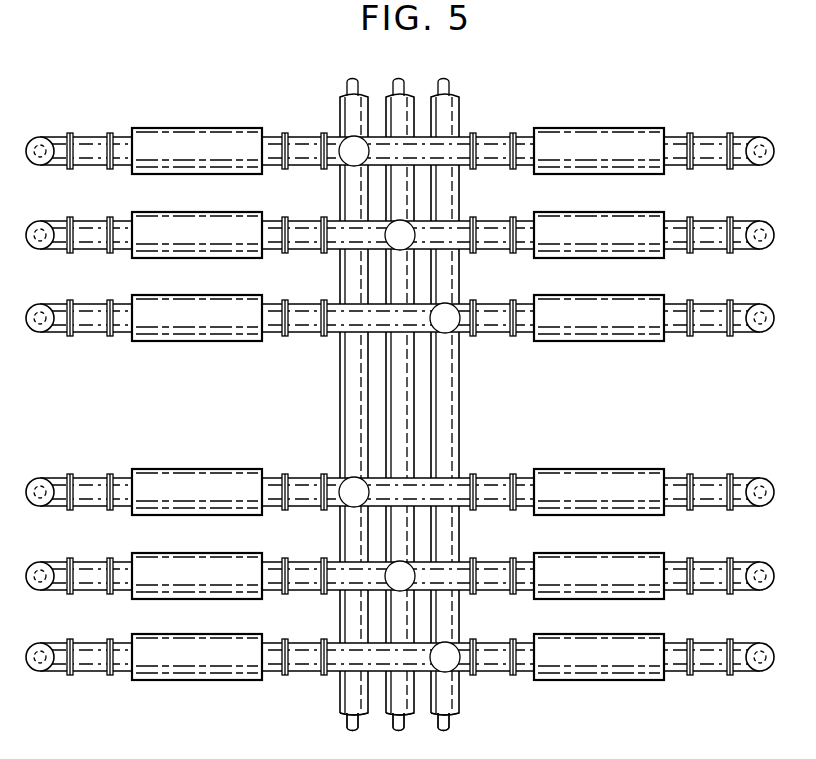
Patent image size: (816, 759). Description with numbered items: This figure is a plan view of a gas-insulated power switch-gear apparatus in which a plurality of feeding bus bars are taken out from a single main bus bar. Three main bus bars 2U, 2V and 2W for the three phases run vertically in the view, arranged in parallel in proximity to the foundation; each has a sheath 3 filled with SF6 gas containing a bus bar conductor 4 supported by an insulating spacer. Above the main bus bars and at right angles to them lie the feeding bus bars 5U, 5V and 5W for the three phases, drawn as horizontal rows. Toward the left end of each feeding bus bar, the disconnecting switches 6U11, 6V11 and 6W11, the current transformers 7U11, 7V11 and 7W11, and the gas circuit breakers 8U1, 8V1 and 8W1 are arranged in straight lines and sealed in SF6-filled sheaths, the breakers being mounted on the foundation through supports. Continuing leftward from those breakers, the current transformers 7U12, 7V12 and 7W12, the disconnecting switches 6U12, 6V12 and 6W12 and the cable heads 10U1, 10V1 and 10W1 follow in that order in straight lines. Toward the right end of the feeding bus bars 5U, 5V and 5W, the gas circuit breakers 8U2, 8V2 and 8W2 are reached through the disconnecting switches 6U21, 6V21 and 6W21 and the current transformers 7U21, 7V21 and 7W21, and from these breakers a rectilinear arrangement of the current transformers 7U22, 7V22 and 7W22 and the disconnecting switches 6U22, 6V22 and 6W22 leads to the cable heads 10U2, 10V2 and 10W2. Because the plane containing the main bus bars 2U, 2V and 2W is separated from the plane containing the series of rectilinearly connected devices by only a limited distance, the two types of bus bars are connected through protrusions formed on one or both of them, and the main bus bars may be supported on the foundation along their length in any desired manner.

The main bus bar 2U is at (340, 391).
The main bus bar 2V is at (388, 420).
The main bus bar 2W is at (459, 424).
The sheath 3 is at (340, 691).
The bus bar conductor 4 is at (346, 722).
The feeding bus bar 5U is at (399, 124).
The feeding bus bar 5V is at (401, 241).
The feeding bus bar 5W is at (394, 326).
The disconnecting switch 6U12 is at (89, 137).
The disconnecting switch 6U11 is at (303, 136).
The disconnecting switch 6U21 is at (493, 137).
The disconnecting switch 6U22 is at (710, 136).
The disconnecting switch 6V12 is at (85, 222).
The disconnecting switch 6V11 is at (306, 222).
The disconnecting switch 6V21 is at (487, 222).
The disconnecting switch 6V22 is at (712, 222).
The disconnecting switch 6W12 is at (94, 334).
The disconnecting switch 6W11 is at (306, 305).
The disconnecting switch 6W21 is at (500, 334).
The disconnecting switch 6W22 is at (707, 304).
The current transformer 7U12 is at (114, 134).
The current transformer 7U11 is at (271, 136).
The current transformer 7U21 is at (527, 133).
The current transformer 7U22 is at (672, 137).
The current transformer 7V12 is at (114, 220).
The current transformer 7V11 is at (267, 221).
The current transformer 7V21 is at (518, 222).
The current transformer 7V22 is at (673, 222).
The current transformer 7W12 is at (114, 303).
The current transformer 7W11 is at (272, 334).
The current transformer 7W21 is at (519, 304).
The current transformer 7W22 is at (677, 335).
The gas circuit breaker 8U1 is at (194, 128).
The gas circuit breaker 8U2 is at (589, 128).
The gas circuit breaker 8V1 is at (183, 213).
The gas circuit breaker 8V2 is at (587, 213).
The gas circuit breaker 8W1 is at (183, 296).
The gas circuit breaker 8W2 is at (587, 296).
The cable head 10U1 is at (41, 138).
The cable head 10U2 is at (759, 132).
The cable head 10V1 is at (41, 222).
The cable head 10V2 is at (768, 218).
The cable head 10W1 is at (41, 305).
The cable head 10W2 is at (753, 342).